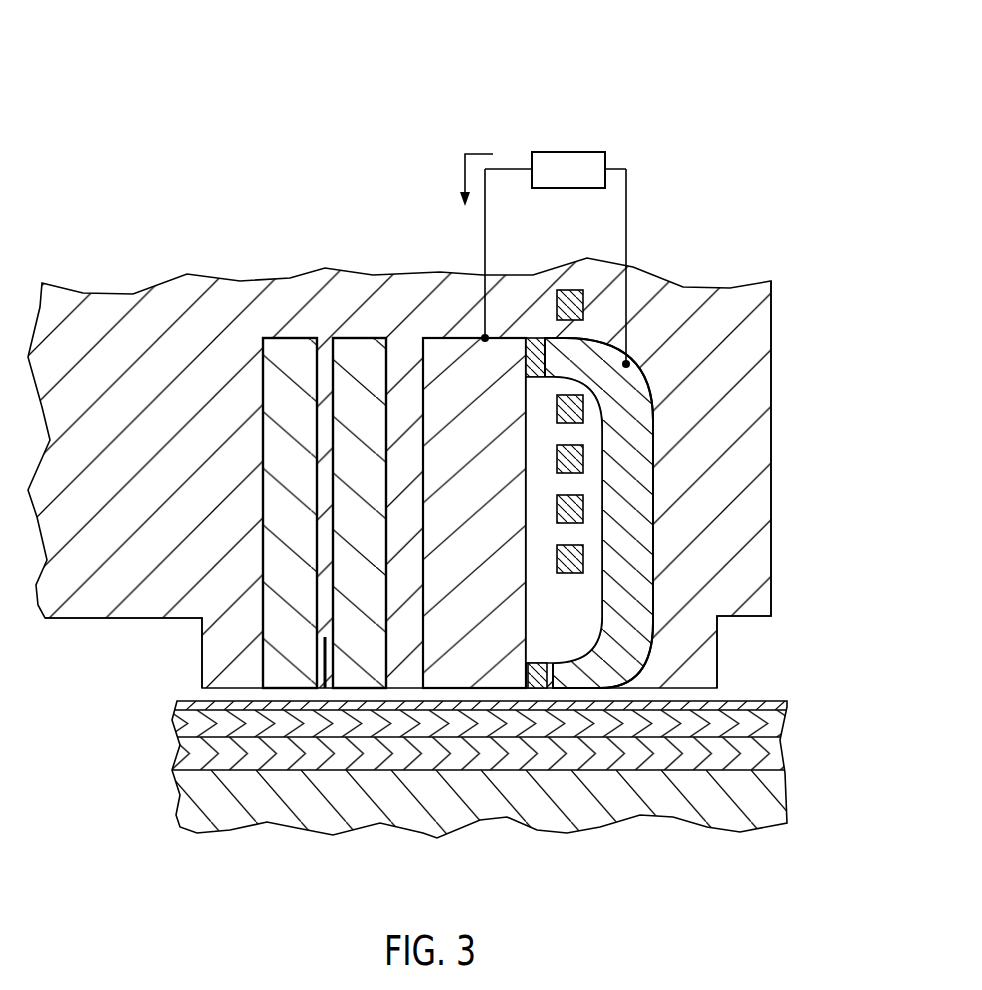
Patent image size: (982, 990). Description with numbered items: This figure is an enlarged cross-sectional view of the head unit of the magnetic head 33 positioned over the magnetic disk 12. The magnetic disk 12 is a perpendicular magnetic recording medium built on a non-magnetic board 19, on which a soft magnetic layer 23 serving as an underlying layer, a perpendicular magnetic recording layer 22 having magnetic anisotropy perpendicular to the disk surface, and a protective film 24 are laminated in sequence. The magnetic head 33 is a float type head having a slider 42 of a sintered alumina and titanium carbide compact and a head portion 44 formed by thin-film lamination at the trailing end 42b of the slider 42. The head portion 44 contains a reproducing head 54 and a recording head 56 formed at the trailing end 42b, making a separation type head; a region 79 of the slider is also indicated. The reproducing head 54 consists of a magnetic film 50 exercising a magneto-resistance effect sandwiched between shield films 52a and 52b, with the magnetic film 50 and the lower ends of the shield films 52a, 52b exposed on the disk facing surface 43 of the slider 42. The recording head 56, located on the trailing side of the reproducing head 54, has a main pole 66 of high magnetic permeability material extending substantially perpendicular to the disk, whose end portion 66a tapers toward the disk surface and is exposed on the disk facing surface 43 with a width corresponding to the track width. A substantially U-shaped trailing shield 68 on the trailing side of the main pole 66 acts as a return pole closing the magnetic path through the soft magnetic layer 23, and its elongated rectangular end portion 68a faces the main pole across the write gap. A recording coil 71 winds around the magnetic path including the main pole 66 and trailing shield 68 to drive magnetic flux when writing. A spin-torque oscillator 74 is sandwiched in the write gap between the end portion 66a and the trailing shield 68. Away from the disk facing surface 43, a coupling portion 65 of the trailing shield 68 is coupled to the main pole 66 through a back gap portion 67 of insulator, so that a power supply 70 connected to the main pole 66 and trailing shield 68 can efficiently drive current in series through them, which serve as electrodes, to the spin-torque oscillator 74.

The magnetic disk 12 is at (482, 758).
The board 19 is at (185, 806).
The perpendicular magnetic recording layer 22 is at (180, 722).
The soft magnetic layer 23 is at (180, 760).
The protective film 24 is at (177, 705).
The magnetic head 33 is at (200, 245).
The slider 42 is at (85, 307).
The trailing end 42b is at (771, 337).
The disk facing surface 43 is at (75, 622).
The head portion 44 is at (350, 225).
The magnetic film 50 is at (325, 657).
The shield film 52a is at (385, 385).
The shield film 52b is at (272, 390).
The reproducing head 54 is at (388, 337).
The recording head 56 is at (613, 253).
The coupling portion 65 is at (558, 358).
The main pole 66 is at (488, 567).
The end portion 66a is at (445, 670).
The back gap portion 67 is at (537, 353).
The trailing shield 68 is at (633, 458).
The end portion 68a is at (588, 673).
The power supply 70 is at (554, 152).
The recording coil 71 is at (583, 555).
The spin-torque oscillator 74 is at (535, 673).
The upper housing region 79 is at (703, 296).